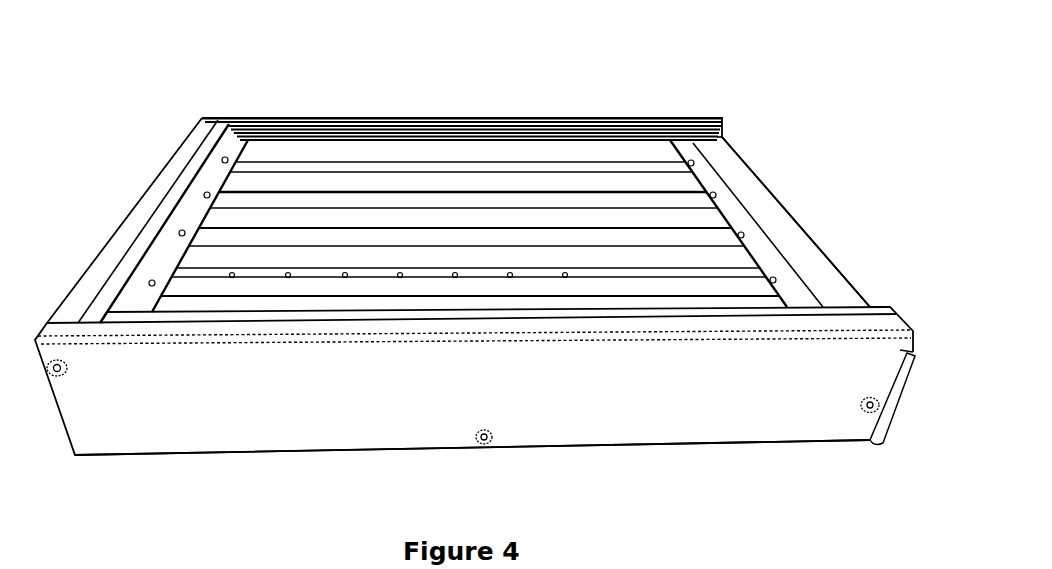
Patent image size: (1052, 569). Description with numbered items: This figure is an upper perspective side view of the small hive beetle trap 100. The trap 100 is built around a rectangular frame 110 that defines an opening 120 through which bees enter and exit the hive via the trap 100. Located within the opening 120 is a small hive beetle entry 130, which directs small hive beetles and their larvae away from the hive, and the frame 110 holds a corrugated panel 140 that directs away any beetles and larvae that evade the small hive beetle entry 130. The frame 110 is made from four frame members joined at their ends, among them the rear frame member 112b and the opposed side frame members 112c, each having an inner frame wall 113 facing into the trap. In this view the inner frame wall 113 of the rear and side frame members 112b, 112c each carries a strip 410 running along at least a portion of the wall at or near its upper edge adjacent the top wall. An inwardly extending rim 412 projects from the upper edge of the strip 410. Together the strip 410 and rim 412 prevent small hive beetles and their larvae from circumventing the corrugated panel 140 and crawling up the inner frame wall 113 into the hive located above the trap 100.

The trap 100 is at (800, 65).
The frame 110 is at (787, 455).
The rear frame member 112b is at (90, 263).
The side frame member 112c is at (242, 420).
The inner frame wall 113 is at (717, 138).
The opening 120 is at (750, 193).
The small hive beetle entry 130 is at (770, 240).
The corrugated panel 140 is at (268, 217).
The strip 410 is at (287, 133).
The rim 412 is at (247, 128).